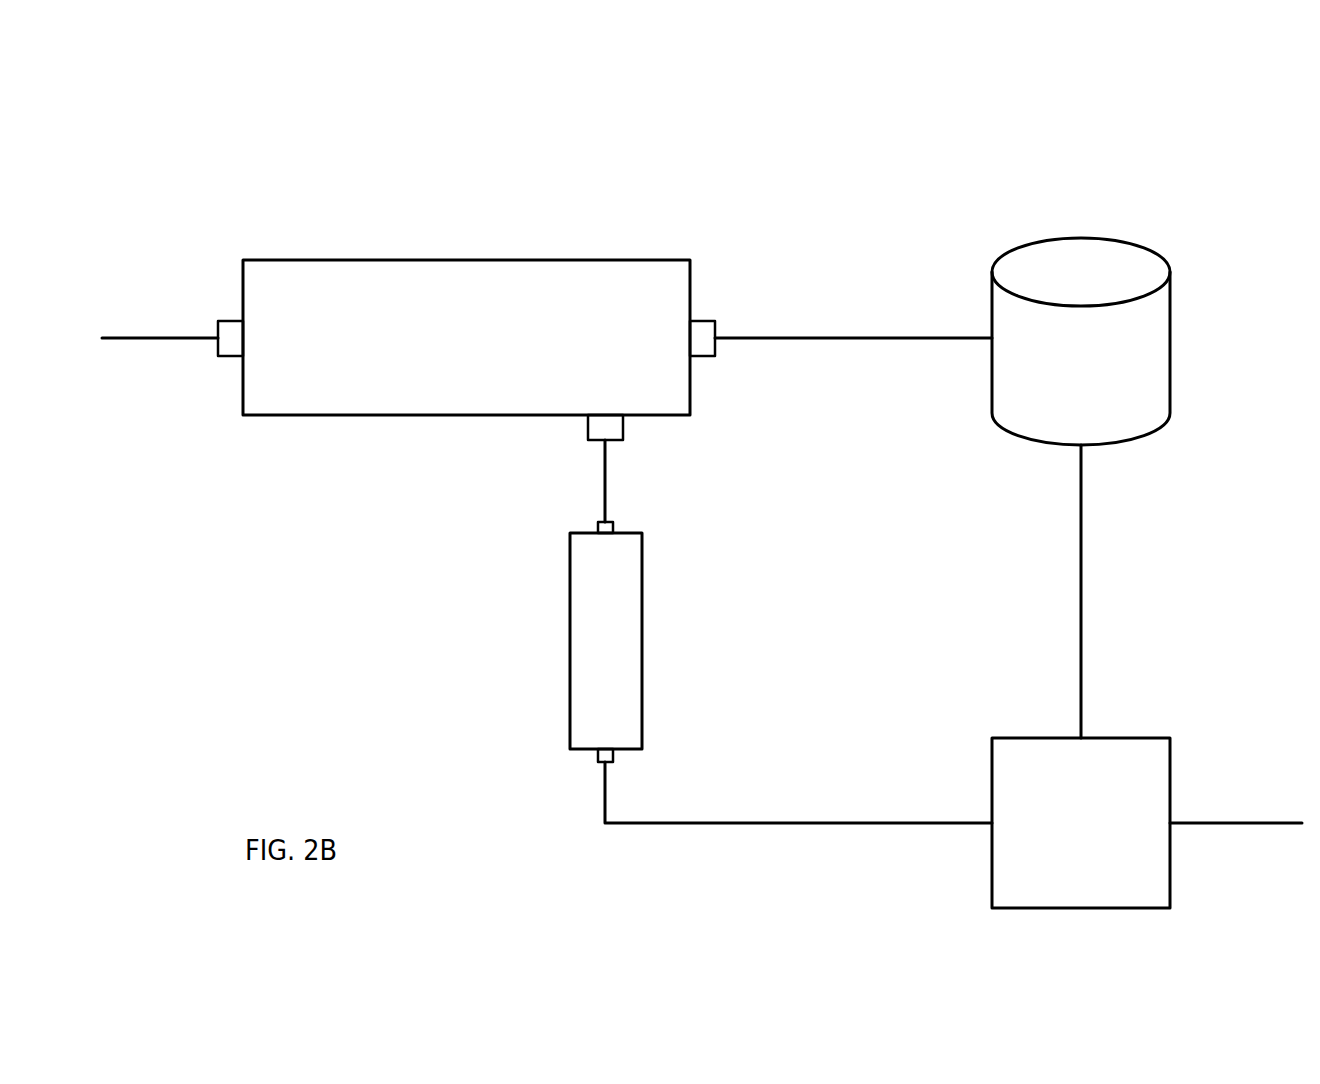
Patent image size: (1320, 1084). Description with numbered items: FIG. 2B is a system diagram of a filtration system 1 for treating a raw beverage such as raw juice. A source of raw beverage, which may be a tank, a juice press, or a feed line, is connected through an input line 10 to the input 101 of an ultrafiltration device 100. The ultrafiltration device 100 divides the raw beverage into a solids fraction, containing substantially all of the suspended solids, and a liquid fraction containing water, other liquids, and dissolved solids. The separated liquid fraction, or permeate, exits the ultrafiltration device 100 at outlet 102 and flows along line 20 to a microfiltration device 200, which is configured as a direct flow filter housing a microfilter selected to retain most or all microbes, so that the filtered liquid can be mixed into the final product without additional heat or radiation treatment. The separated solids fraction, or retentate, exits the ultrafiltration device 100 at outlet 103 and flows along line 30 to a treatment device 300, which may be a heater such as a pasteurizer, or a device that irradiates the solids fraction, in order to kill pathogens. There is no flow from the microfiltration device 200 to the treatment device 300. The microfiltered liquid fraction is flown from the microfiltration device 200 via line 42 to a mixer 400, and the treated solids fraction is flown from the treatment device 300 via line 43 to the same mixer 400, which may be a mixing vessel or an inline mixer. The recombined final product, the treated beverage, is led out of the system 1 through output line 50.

The system 1 is at (205, 133).
The input line 10 is at (135, 338).
The line 20 is at (605, 483).
The line 30 is at (845, 338).
The line 42 is at (793, 823).
The line 43 is at (1079, 535).
The output line 50 is at (1262, 823).
The ultrafiltration device 100 is at (413, 260).
The input 101 is at (228, 321).
The outlet 102 is at (612, 437).
The outlet 103 is at (715, 330).
The microfiltration device 200 is at (585, 648).
The treatment device 300 is at (1080, 250).
The mixer 400 is at (1034, 757).